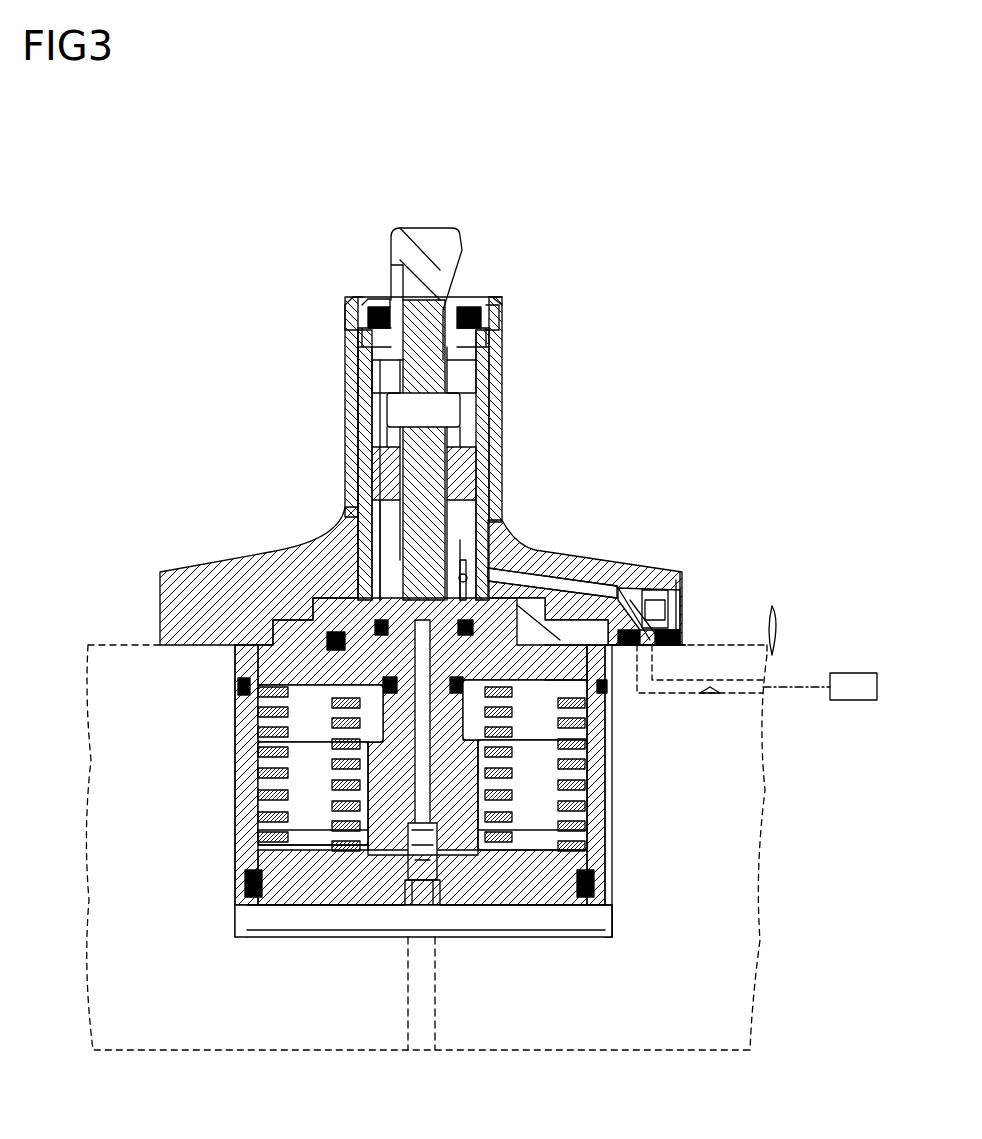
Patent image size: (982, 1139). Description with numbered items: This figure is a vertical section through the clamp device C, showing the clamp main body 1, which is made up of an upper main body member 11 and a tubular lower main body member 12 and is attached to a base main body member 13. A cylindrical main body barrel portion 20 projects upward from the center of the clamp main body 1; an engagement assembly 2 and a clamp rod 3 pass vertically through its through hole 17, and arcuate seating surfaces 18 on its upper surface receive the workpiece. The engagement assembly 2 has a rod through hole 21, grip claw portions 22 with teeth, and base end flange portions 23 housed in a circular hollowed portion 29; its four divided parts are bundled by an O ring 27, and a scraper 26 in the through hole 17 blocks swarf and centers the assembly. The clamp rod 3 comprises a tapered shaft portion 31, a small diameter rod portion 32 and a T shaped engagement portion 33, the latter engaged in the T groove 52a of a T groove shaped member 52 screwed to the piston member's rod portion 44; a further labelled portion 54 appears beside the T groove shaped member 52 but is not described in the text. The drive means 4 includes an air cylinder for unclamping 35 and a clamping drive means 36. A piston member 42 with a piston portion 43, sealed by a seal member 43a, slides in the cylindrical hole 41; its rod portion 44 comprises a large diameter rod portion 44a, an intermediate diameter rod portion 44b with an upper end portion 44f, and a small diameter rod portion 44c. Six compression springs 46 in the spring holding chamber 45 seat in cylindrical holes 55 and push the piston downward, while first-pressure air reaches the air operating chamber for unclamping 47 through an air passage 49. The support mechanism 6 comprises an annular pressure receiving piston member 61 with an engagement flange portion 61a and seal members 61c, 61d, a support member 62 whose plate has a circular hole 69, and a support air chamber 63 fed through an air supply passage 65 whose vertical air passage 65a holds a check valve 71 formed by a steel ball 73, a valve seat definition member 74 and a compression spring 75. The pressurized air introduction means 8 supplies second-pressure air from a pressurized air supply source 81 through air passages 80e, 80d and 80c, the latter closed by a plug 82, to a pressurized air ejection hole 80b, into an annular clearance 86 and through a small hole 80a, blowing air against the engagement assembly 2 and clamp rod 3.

The clamp main body 1 is at (782, 630).
The engagement assembly 2 is at (470, 262).
The clamp rod 3 is at (447, 210).
The drive means 4 is at (270, 917).
The support mechanism 6 is at (258, 730).
The pressurized air introduction means 8 is at (615, 566).
The upper main body member 11 is at (690, 626).
The lower main body member 12 is at (655, 665).
The base main body member 13 is at (762, 825).
The through hole 17 is at (492, 322).
The seating surfaces 18 is at (502, 303).
The main body barrel portion 20 is at (502, 435).
The rod through hole 21 is at (494, 312).
The grip claw portions 22 is at (470, 300).
The base end flange portions 23 is at (492, 340).
The scraper 26 is at (374, 305).
The O ring 27 is at (372, 302).
The circular hollowed portion 29 is at (346, 332).
The tapered shaft portion 31 is at (450, 250).
The small diameter rod portion 32 is at (424, 450).
The T shaped engagement portion 33 is at (423, 410).
The air cylinder for unclamping 35 is at (610, 918).
The clamping drive means 36 is at (185, 856).
The cylindrical hole 41 is at (606, 805).
The piston member 42 is at (250, 920).
The piston portion 43 is at (262, 890).
The seal member 43a is at (612, 880).
The rod portion 44 is at (590, 750).
The large diameter rod portion 44a is at (460, 808).
The intermediate diameter rod portion 44b is at (486, 712).
The small diameter rod portion 44c is at (472, 540).
The upper end portion 44f is at (512, 690).
The spring holding chamber 45 is at (258, 820).
The compression springs 46 is at (260, 790).
The air operating chamber for unclamping 47 is at (340, 920).
The air passage 49 is at (440, 990).
The T groove shaped member 52 is at (482, 462).
The T groove 52a is at (497, 398).
The sleeve lower part 54 is at (358, 517).
The cylindrical holes 55 is at (600, 688).
The annular pressure receiving piston member 61 is at (262, 700).
The engagement flange portion 61a is at (313, 598).
The seal member 61c is at (433, 719).
The seal member 61d is at (540, 650).
The support member 62 is at (345, 418).
The support air chamber 63 is at (327, 702).
The air supply passage 65 is at (400, 852).
The air passage 65a is at (412, 832).
The circular hole 69 is at (370, 376).
The check valve 71 is at (400, 895).
The steel ball 73 is at (408, 840).
The valve seat definition member 74 is at (446, 897).
The compression spring 75 is at (430, 822).
The small hole 80a is at (458, 568).
The pressurized air ejection hole 80b is at (530, 574).
The air passage 80c is at (598, 565).
The air passage 80d is at (683, 578).
The air passage 80e is at (712, 698).
The pressurized air supply source 81 is at (853, 702).
The plug 82 is at (683, 602).
The annular clearance 86 is at (458, 592).
The clamp device C is at (618, 180).